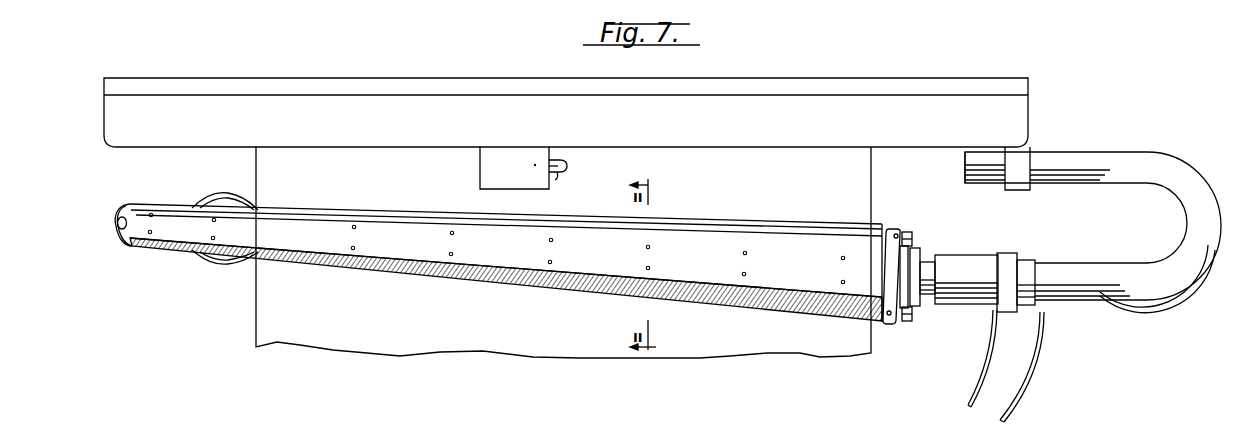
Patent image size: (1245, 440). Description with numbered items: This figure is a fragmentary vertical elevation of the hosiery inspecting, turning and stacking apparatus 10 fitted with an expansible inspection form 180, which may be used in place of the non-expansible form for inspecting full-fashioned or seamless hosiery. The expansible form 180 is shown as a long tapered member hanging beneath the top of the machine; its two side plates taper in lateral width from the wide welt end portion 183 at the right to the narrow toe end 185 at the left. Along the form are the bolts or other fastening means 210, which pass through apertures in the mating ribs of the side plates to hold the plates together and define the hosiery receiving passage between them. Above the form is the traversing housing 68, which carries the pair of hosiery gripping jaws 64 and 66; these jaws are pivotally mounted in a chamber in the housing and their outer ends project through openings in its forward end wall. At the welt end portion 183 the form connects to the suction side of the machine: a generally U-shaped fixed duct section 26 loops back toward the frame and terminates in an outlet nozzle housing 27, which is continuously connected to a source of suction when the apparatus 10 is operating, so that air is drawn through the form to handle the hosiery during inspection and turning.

The hosiery inspecting, turning and stacking apparatus 10 is at (135, 150).
The U-shaped fixed duct section 26 is at (1098, 268).
The outlet nozzle housing 27 is at (983, 188).
The gripping jaw 64 is at (568, 160).
The gripping jaw 66 is at (557, 172).
The traversing housing 68 is at (480, 168).
The expansible inspection form 180 is at (238, 187).
The welt end portion 183 is at (873, 325).
The toe end 185 is at (127, 238).
The fastening means 210 is at (455, 235).